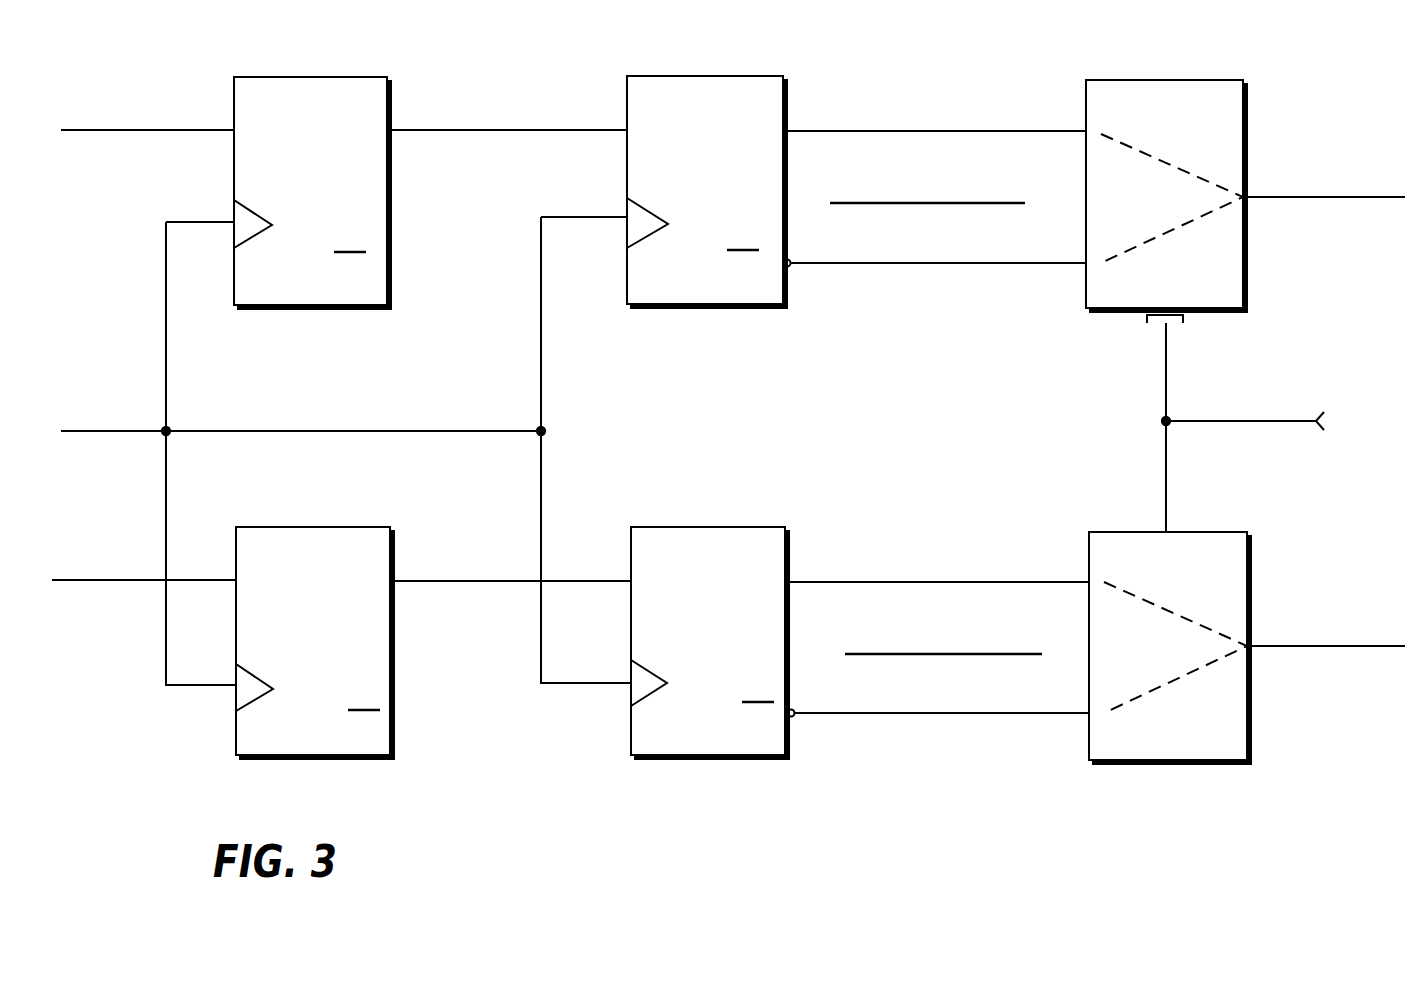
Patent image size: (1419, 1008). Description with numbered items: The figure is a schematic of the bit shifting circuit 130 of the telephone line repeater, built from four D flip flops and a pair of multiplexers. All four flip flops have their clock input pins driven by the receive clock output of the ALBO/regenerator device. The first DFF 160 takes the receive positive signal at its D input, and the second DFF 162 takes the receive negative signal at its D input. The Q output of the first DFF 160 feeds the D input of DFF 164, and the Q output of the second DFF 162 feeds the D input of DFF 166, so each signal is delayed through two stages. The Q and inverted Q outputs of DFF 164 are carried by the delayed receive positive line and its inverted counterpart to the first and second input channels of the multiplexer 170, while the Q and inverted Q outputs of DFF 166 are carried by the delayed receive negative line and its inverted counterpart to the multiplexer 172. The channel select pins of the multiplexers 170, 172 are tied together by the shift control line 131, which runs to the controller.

The bit shifting circuit 130 is at (677, 799).
The shift control line 131 is at (1240, 421).
The first DFF 160 is at (307, 105).
The second DFF 162 is at (272, 543).
The DFF 164 is at (652, 90).
The DFF 166 is at (668, 745).
The multiplexer 170 is at (1187, 87).
The multiplexer 172 is at (1199, 532).